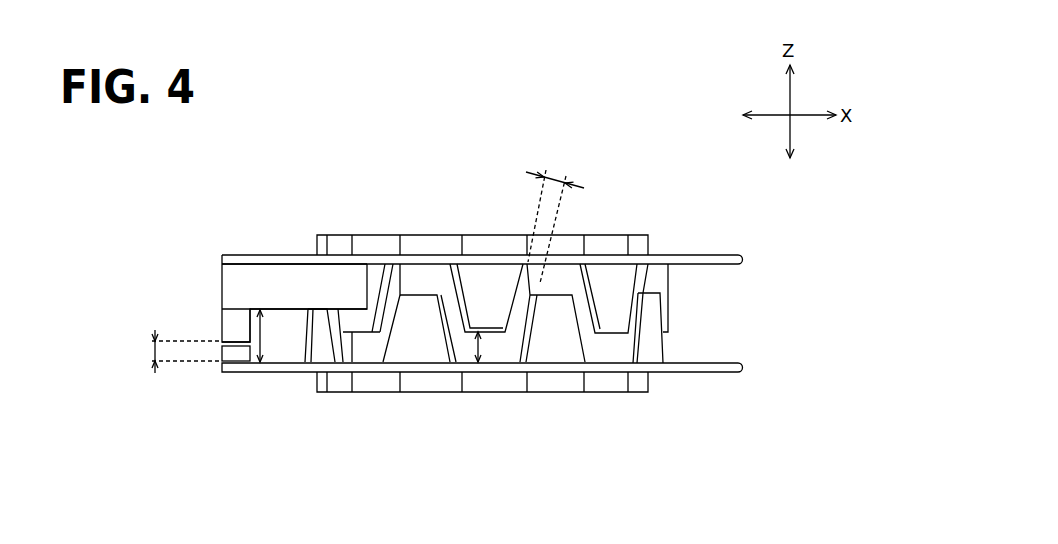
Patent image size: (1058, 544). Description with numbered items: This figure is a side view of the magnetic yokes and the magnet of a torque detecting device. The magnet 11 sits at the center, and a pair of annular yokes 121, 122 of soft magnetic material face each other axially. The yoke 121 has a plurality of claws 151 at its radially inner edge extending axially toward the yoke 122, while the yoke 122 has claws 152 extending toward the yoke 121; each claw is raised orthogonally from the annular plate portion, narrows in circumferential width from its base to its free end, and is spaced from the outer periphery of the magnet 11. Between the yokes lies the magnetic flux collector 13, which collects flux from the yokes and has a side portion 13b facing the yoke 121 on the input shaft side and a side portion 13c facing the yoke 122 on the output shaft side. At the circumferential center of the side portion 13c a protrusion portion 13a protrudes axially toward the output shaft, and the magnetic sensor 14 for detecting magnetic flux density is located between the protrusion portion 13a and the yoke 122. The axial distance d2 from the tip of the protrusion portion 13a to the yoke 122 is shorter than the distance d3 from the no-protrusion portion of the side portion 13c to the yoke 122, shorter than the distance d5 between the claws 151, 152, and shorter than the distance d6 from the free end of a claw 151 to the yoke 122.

The magnet 11 is at (615, 235).
The yoke 121 is at (727, 255).
The yoke 122 is at (728, 374).
The magnetic flux collector 13 is at (222, 280).
The protrusion portion 13a is at (222, 330).
The side portion 13b is at (253, 262).
The side portion 13c is at (280, 310).
The magnetic sensor 14 is at (220, 353).
The claws 151 is at (482, 295).
The claws 152 is at (545, 352).
The distance d2 is at (168, 351).
The distance d3 is at (267, 342).
The distance d5 is at (555, 214).
The distance d6 is at (491, 347).